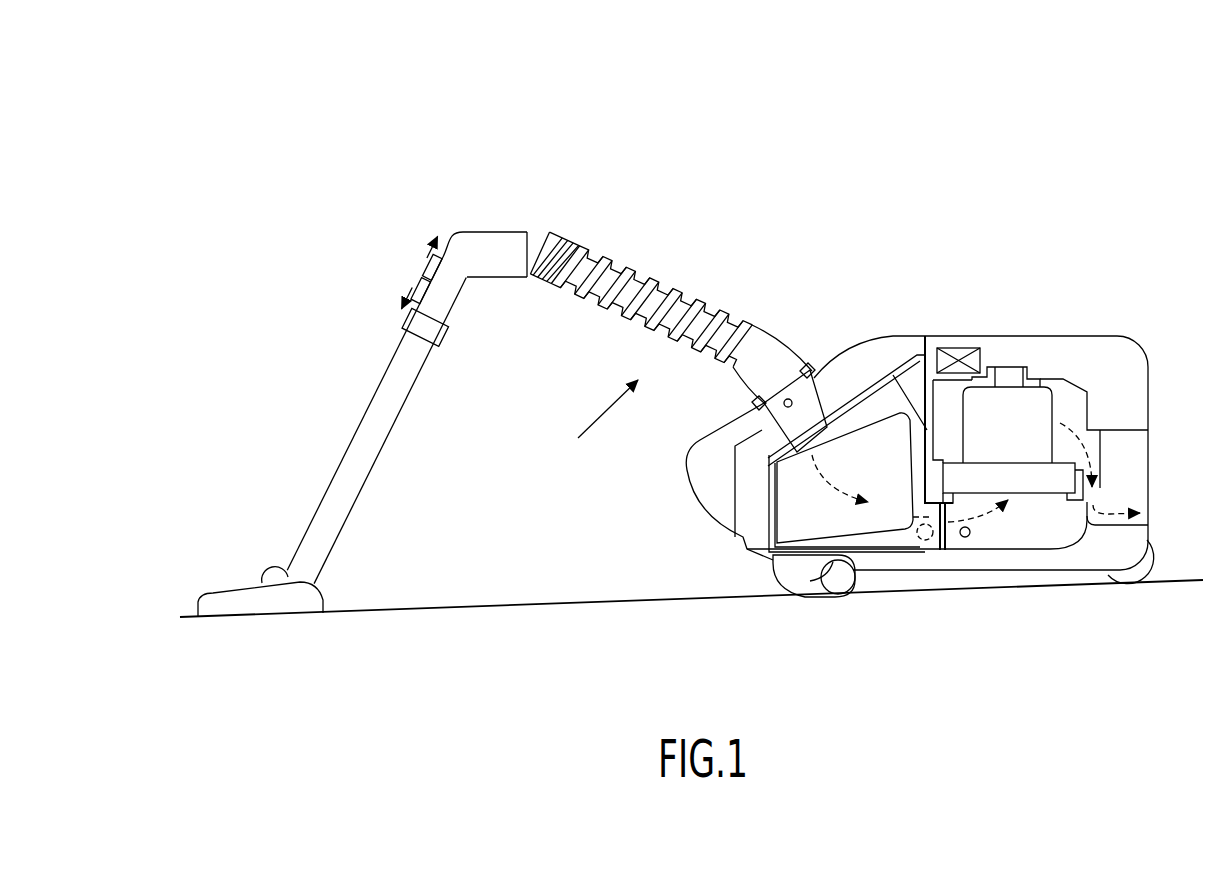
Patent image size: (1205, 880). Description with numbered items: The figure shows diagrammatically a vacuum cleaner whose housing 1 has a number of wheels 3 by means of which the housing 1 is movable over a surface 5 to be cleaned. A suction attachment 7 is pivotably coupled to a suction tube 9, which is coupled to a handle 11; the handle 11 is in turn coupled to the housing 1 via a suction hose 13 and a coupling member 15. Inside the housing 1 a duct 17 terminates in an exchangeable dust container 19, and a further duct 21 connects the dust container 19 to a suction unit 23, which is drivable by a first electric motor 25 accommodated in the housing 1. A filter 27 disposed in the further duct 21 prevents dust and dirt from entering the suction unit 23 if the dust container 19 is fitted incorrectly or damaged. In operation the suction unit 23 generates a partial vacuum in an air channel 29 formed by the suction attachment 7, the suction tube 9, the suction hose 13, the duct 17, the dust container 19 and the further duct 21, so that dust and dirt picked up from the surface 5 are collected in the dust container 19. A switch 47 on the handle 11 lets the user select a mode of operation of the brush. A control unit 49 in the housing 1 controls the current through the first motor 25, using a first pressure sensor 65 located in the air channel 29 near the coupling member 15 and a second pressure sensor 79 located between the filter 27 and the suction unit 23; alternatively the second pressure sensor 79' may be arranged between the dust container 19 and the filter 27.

The housing 1 is at (953, 335).
The wheels 3 is at (828, 597).
The surface to be cleaned 5 is at (487, 612).
The suction attachment 7 is at (232, 602).
The suction tube 9 is at (397, 423).
The handle 11 is at (482, 240).
The suction hose 13 is at (653, 270).
The coupling member 15 is at (782, 373).
The duct 17 is at (817, 397).
The dust container 19 is at (768, 515).
The further duct 21 is at (987, 552).
The suction unit 23 is at (1052, 497).
The first electric motor 25 is at (1037, 407).
The filter 27 is at (942, 552).
The air channel 29 is at (551, 467).
The switch 47 is at (418, 272).
The control unit 49 is at (972, 347).
The first pressure sensor 65 is at (755, 417).
The second pressure sensor 79 is at (969, 524).
The second pressure sensor (alternative arrangement) 79' is at (895, 583).